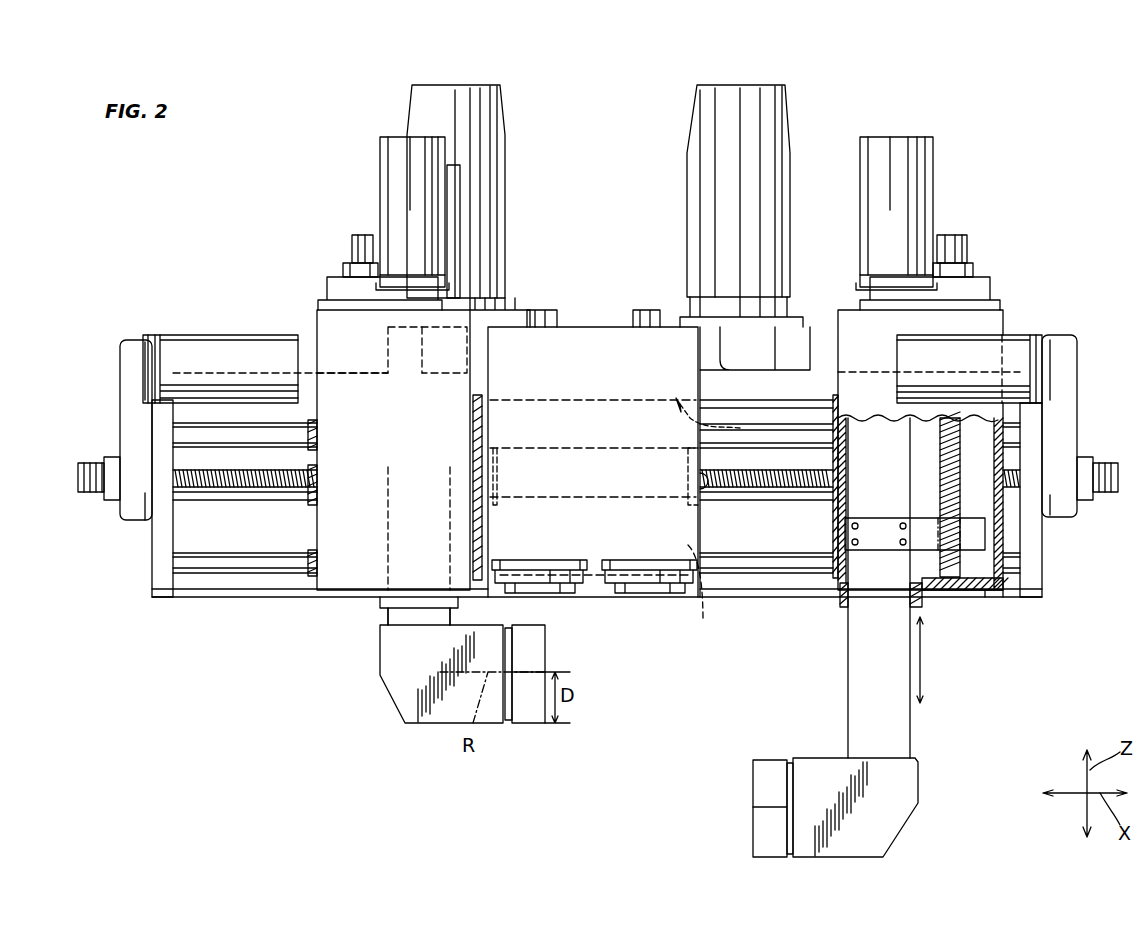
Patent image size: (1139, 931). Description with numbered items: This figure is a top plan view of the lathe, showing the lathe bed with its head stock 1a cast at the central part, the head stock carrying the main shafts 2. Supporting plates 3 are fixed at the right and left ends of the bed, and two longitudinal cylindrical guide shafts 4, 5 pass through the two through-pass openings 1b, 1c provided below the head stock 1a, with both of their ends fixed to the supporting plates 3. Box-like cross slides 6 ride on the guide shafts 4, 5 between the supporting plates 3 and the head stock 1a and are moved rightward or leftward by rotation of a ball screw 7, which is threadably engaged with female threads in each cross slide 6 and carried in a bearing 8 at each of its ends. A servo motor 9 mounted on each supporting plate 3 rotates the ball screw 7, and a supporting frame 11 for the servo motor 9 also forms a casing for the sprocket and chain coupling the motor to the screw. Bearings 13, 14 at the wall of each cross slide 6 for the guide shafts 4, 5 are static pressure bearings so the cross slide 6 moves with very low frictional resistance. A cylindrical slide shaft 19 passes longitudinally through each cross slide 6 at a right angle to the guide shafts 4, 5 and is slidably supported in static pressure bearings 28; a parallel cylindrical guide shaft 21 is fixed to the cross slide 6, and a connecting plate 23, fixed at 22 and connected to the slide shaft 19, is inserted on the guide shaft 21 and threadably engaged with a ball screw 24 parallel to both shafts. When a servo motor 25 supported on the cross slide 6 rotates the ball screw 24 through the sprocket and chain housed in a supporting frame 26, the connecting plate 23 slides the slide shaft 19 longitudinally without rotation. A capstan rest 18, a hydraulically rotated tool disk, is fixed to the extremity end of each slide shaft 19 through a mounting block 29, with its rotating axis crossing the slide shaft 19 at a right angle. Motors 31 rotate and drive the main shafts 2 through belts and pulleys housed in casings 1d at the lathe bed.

The head stock 1a is at (592, 340).
The through-pass opening 1b is at (701, 595).
The through-pass opening 1c is at (718, 419).
The casing 1d is at (752, 340).
The main shaft 2 is at (545, 595).
The supporting plate 3 is at (160, 548).
The guide shaft 4 is at (238, 565).
The guide shaft 5 is at (180, 432).
The cross slide 6 is at (660, 450).
The ball screw 7 is at (245, 487).
The bearing 8 is at (497, 505).
The servo motor 9 is at (212, 350).
The supporting frame 11 is at (132, 380).
The bearing 13 is at (292, 575).
The bearing 14 is at (312, 445).
The capstan rest 18 is at (523, 725).
The slide shaft 19 is at (905, 728).
The guide shaft 21 is at (980, 592).
The fixing point 22 is at (902, 523).
The connecting plate 23 is at (932, 600).
The ball screw 24 is at (352, 248).
The servo motor 25 is at (398, 175).
The supporting frame 26 is at (330, 288).
The bearing 28 is at (840, 608).
The mounting block 29 is at (402, 705).
The motor 31 is at (498, 183).